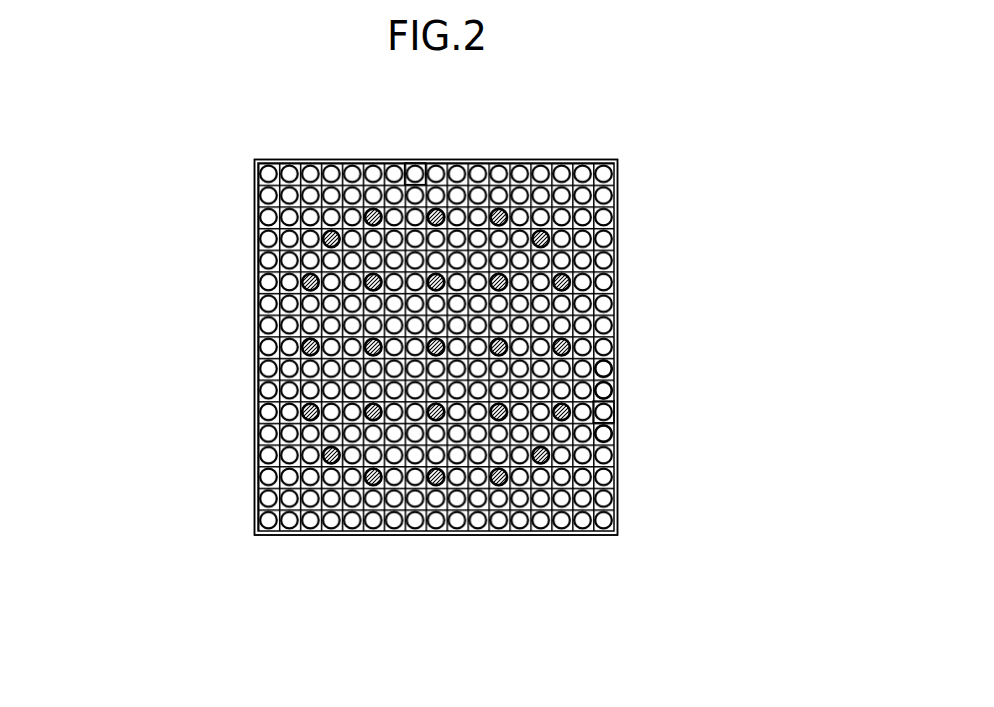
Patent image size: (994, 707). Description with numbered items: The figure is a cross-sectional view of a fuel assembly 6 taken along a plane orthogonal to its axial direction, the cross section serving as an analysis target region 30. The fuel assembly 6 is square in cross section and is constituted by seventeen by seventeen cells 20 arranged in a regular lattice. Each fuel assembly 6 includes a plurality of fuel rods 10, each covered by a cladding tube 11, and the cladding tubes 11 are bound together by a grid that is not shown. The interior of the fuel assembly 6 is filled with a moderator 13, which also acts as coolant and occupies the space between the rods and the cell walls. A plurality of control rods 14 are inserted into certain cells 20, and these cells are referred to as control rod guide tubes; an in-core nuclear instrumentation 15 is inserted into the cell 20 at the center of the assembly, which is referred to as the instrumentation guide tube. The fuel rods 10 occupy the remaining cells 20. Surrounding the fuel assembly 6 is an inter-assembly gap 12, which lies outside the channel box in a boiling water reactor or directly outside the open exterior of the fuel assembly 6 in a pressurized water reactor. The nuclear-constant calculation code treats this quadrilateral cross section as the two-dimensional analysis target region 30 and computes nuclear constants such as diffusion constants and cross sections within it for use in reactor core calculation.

The fuel assembly 6 is at (625, 220).
The fuel rod 10 is at (603, 390).
The cladding tube 11 is at (620, 437).
The inter-assembly gap 12 is at (555, 160).
The moderator 13 is at (620, 418).
The control rod 14 is at (577, 342).
The in-core nuclear instrumentation 15 is at (431, 343).
The cell 20 is at (435, 177).
The analysis target region 30 is at (549, 541).